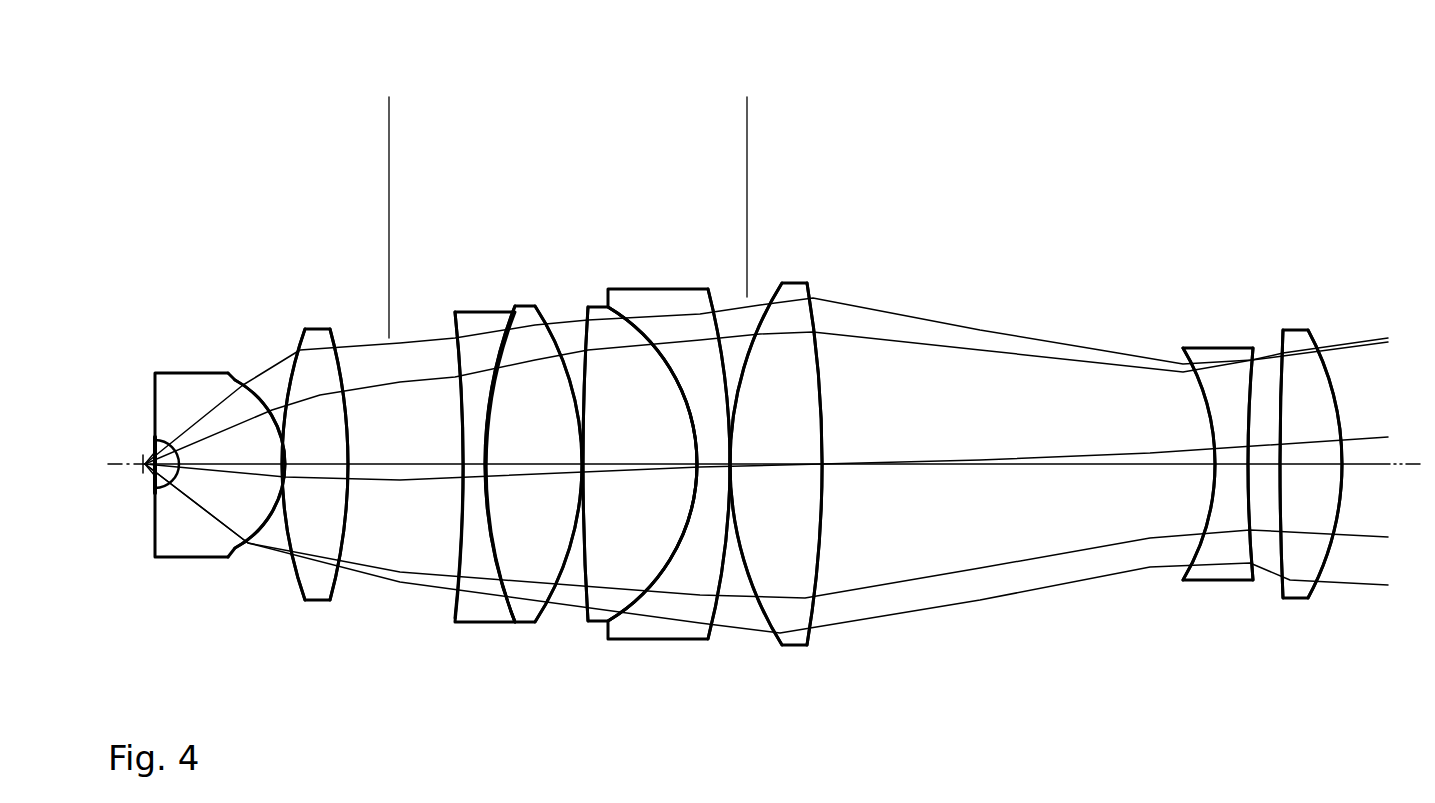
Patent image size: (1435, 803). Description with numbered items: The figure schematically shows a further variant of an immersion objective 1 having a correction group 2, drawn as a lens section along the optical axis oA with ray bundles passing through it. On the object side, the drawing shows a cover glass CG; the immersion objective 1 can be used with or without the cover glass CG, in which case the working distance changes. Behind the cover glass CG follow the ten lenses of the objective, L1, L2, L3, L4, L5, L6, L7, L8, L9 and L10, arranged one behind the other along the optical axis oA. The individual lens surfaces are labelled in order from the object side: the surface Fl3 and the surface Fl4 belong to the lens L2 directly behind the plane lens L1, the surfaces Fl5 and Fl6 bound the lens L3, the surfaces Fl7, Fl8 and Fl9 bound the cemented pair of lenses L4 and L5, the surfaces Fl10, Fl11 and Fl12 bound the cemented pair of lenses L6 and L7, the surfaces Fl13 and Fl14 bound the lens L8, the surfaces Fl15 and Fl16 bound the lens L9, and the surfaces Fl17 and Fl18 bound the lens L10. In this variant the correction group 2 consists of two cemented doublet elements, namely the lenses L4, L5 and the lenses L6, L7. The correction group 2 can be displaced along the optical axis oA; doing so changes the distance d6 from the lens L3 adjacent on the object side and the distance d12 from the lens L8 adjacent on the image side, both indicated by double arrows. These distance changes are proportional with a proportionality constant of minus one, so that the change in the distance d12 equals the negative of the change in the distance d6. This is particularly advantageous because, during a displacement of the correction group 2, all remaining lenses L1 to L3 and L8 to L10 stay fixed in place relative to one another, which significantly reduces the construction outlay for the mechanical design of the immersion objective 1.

The immersion objective 1 is at (934, 128).
The correction group 2 is at (539, 138).
The cover glass CG is at (150, 485).
The lens L1 is at (167, 480).
The lens L2 is at (218, 545).
The lens L3 is at (318, 588).
The lens L4 is at (485, 610).
The lens L5 is at (528, 612).
The lens L6 is at (598, 613).
The lens L7 is at (658, 630).
The lens L8 is at (792, 638).
The lens L9 is at (1227, 573).
The lens L10 is at (1295, 588).
The optical axis oA is at (1412, 466).
The distance d6 is at (392, 189).
The distance d12 is at (746, 169).
The surface Fl3 is at (150, 440).
The surface Fl4 is at (244, 383).
The surface Fl5 is at (298, 347).
The surface Fl6 is at (342, 342).
The surface Fl7 is at (455, 366).
The surface Fl8 is at (503, 347).
The surface Fl9 is at (544, 316).
The surface Fl10 is at (584, 337).
The surface Fl11 is at (683, 403).
The surface Fl12 is at (738, 390).
The surface Fl13 is at (800, 290).
The surface Fl14 is at (819, 387).
The surface Fl15 is at (1203, 408).
The surface Fl16 is at (1250, 425).
The surface Fl17 is at (1281, 388).
The surface Fl18 is at (1337, 415).